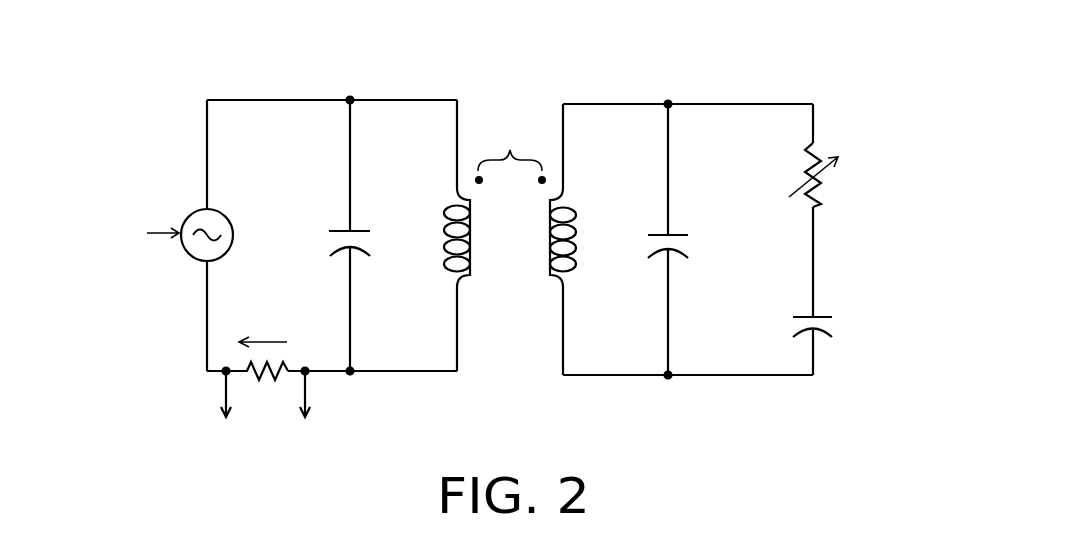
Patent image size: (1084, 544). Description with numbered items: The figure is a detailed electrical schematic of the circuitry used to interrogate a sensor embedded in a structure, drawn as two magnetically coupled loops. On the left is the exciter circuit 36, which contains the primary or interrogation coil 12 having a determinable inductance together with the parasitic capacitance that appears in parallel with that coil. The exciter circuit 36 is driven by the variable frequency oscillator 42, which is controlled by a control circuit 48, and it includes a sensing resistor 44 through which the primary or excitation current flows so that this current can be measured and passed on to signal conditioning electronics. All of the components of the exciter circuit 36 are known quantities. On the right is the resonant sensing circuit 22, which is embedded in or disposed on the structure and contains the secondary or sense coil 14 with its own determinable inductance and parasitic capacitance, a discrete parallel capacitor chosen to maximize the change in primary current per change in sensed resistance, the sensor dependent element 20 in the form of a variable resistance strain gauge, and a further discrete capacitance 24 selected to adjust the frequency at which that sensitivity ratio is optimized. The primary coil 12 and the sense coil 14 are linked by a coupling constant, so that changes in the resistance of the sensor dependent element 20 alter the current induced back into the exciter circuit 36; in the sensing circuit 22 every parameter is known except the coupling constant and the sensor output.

The exciter circuit 36 is at (348, 76).
The resonant sensing circuit 22 is at (773, 86).
The variable frequency oscillator 42 is at (193, 258).
The control circuit 48 is at (122, 247).
The sensing resistor 44 is at (291, 361).
The primary or interrogation coil 12 is at (446, 238).
The secondary or sense coil 14 is at (577, 239).
The sensor dependent element 20 is at (794, 159).
The capacitance 24 is at (818, 315).